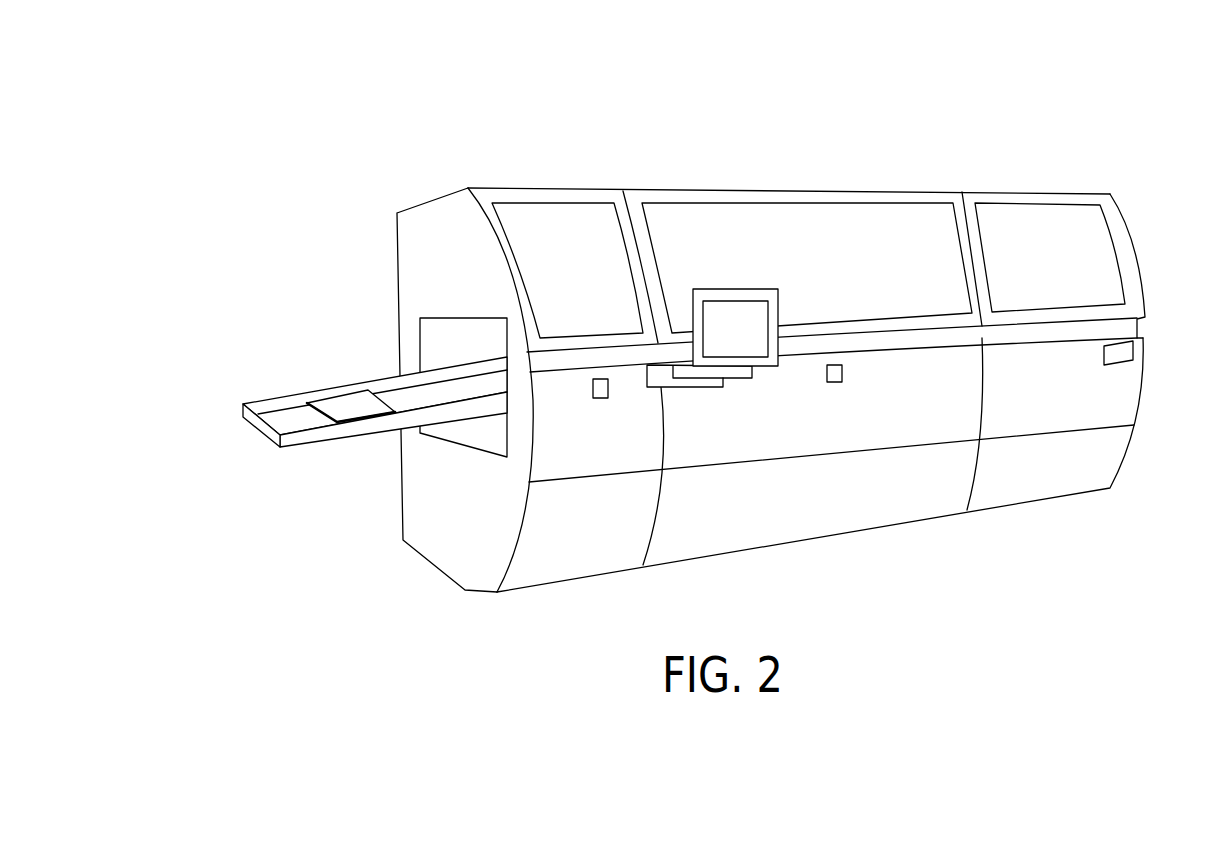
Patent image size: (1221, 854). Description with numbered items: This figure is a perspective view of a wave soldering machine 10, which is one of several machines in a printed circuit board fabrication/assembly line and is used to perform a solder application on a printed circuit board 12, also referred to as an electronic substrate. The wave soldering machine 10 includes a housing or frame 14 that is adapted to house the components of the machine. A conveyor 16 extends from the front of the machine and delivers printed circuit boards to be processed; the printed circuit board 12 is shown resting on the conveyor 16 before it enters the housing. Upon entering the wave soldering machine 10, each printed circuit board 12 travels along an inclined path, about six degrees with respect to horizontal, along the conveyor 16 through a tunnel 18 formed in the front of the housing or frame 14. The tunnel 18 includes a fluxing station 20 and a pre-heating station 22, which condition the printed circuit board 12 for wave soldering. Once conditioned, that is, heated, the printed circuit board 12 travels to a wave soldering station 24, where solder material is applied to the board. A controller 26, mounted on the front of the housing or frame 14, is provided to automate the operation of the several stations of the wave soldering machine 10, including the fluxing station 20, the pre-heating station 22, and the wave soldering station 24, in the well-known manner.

The wave soldering machine 10 is at (700, 321).
The printed circuit board 12 is at (340, 403).
The housing or frame 14 is at (1143, 390).
The conveyor 16 is at (364, 417).
The tunnel 18 is at (452, 335).
The fluxing station 20 is at (567, 222).
The pre-heating station 22 is at (711, 214).
The wave soldering station 24 is at (1097, 222).
The controller 26 is at (779, 306).